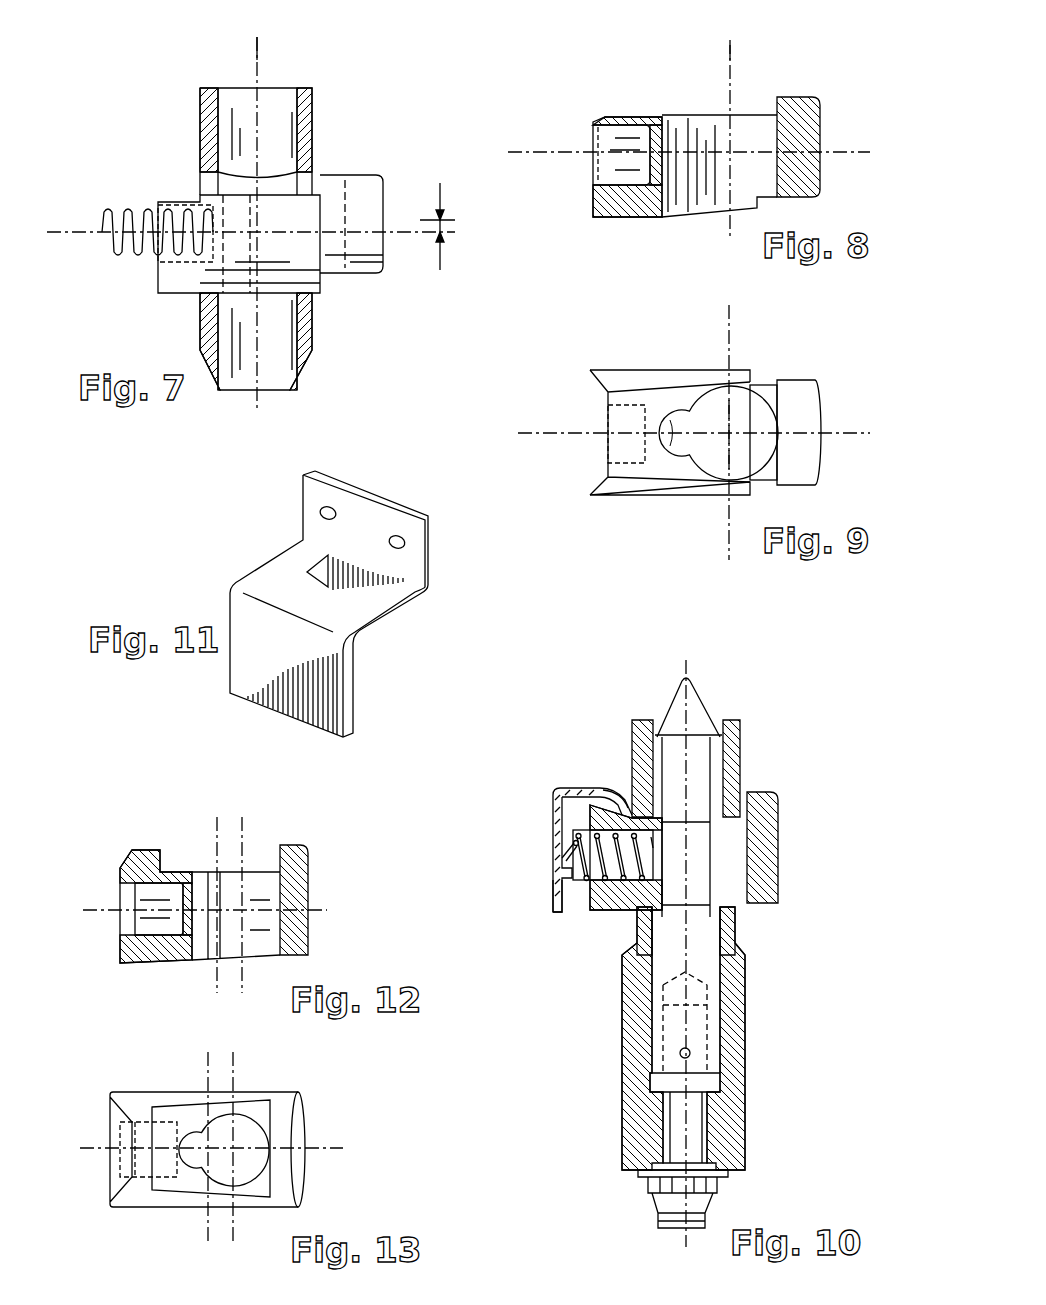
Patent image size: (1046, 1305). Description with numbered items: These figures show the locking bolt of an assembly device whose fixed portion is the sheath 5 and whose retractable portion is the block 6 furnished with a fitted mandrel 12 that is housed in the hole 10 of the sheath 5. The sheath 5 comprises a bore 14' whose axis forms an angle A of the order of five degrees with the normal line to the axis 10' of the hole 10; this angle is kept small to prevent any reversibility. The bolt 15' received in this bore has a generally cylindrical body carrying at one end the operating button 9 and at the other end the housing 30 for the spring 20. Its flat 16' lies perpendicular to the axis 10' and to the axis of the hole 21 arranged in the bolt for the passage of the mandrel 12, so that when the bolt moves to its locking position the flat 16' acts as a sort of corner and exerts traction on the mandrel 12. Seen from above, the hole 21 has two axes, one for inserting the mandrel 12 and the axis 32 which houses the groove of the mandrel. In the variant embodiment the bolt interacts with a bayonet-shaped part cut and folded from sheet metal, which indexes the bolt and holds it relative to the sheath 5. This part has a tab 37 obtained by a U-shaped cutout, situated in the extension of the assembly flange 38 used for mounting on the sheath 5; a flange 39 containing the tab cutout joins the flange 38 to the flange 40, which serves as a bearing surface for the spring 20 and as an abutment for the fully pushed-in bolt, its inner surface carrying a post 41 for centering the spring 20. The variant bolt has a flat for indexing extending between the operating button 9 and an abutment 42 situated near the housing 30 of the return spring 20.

In FIG. 7, the sheath 5 is at (312, 118).
In FIG. 10, the sheath 5 is at (747, 741).
In FIG. 10, the block 6 is at (612, 1077).
In FIG. 7, the operating button 9 is at (383, 202).
In FIG. 8, the operating button 9 is at (820, 130).
In FIG. 9, the operating button 9 is at (818, 412).
In FIG. 7, the hole 10 is at (274, 203).
In FIG. 10, the hole 10 is at (686, 950).
In FIG. 7, the axis 10' is at (216, 37).
In FIG. 8, the axis 10' is at (775, 64).
In FIG. 10, the mandrel 12 is at (715, 693).
In FIG. 7, the bore 14' is at (308, 150).
In FIG. 7, the bolt 15' is at (112, 171).
In FIG. 8, the bolt 15' is at (545, 91).
In FIG. 9, the bolt 15' is at (551, 368).
In FIG. 7, the flat 16' is at (231, 212).
In FIG. 8, the flat 16' is at (621, 135).
In FIG. 9, the flat 16' is at (670, 407).
In FIG. 7, the spring 20 is at (112, 258).
In FIG. 10, the spring 20 is at (582, 880).
In FIG. 8, the hole 21 is at (717, 138).
In FIG. 9, the hole 21 is at (748, 412).
In FIG. 12, the hole 21 is at (258, 936).
In FIG. 13, the hole 21 is at (247, 1138).
In FIG. 8, the housing 30 is at (612, 170).
In FIG. 12, the housing 30 is at (150, 924).
In FIG. 9, the axis 32 is at (684, 430).
In FIG. 11, the tab 37 is at (365, 582).
In FIG. 10, the tab 37 is at (622, 793).
In FIG. 11, the flange 38 is at (360, 530).
In FIG. 11, the flange 39 is at (282, 586).
In FIG. 11, the flange 40 is at (280, 655).
In FIG. 10, the flange 40 is at (552, 904).
In FIG. 10, the post 41 is at (563, 857).
In FIG. 12, the abutment 42 is at (160, 850).
In FIG. 13, the abutment 42 is at (142, 1130).
In FIG. 7, the angle A is at (441, 228).